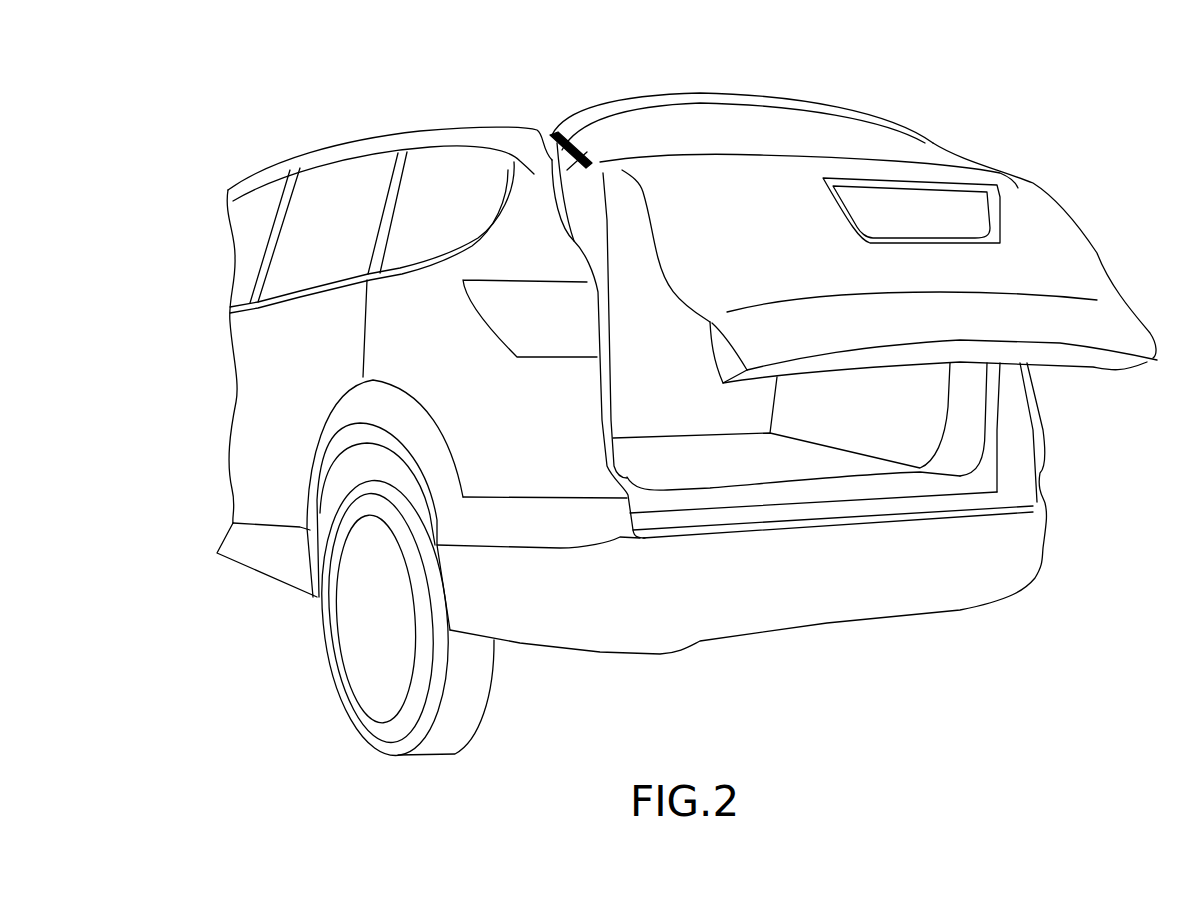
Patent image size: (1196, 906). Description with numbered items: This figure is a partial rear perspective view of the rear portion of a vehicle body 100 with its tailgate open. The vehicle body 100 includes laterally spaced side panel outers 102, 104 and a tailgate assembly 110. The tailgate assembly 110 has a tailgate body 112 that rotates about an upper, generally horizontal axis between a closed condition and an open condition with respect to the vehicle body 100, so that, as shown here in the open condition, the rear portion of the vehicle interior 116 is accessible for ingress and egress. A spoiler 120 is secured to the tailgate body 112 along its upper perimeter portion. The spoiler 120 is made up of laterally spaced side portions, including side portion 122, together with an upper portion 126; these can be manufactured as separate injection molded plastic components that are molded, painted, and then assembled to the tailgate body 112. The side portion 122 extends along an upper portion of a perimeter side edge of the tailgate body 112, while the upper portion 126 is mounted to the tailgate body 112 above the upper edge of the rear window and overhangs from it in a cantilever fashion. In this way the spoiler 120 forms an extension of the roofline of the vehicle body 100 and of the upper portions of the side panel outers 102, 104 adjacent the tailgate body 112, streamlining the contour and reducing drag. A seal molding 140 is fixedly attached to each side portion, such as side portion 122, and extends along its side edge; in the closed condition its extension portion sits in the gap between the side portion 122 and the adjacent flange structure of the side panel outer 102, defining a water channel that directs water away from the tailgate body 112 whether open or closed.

The vehicle body 100 is at (687, 389).
The side panel outer 102 is at (400, 343).
The side panel outer 104 is at (927, 415).
The tailgate assembly 110 is at (1052, 145).
The tailgate body 112 is at (1053, 247).
The vehicle interior 116 is at (705, 490).
The spoiler 120 is at (829, 200).
The side portion 122 is at (568, 204).
The upper portion 126 is at (718, 100).
The seal molding 140 is at (547, 158).